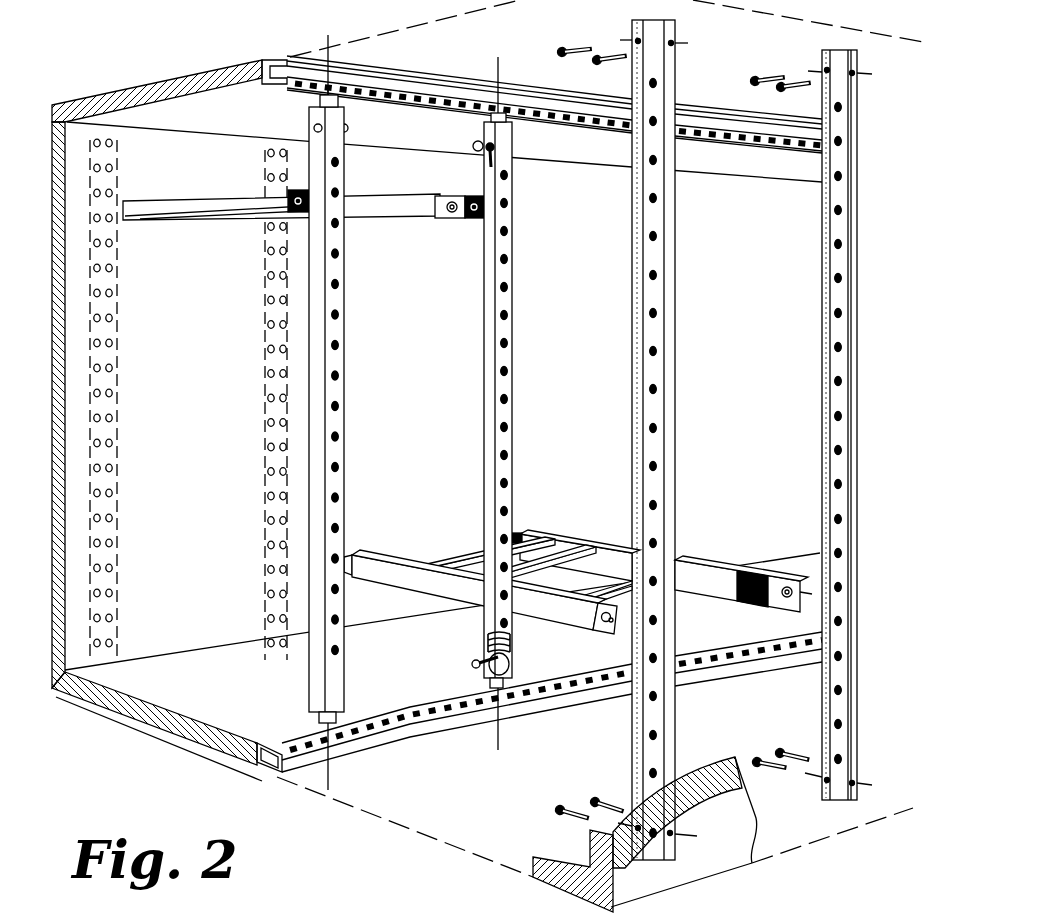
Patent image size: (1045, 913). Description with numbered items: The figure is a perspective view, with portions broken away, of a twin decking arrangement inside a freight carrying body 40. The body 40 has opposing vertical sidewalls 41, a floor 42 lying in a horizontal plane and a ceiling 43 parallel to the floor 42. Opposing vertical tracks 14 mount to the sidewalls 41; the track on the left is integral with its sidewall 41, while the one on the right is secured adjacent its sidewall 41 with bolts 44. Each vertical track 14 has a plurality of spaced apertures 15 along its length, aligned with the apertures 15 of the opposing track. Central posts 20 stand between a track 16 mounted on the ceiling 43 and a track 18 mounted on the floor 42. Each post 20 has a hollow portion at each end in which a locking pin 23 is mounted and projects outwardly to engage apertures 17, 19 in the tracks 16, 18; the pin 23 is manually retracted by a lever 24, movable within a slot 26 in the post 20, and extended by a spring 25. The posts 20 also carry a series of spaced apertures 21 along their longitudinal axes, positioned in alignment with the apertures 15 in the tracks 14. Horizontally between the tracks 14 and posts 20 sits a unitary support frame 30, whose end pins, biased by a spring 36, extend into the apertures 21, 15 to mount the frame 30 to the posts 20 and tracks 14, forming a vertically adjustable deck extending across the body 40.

The vertical track 14 is at (497, 440).
The apertures 15 is at (106, 343).
The track 16 is at (413, 83).
The apertures 17 is at (426, 100).
The track 18 is at (372, 732).
The apertures 19 is at (408, 722).
The post 20 is at (437, 405).
The apertures 21 is at (341, 466).
The locking pin 23 is at (339, 99).
The lever 24 is at (476, 667).
The spring 25 is at (486, 633).
The slot 26 is at (486, 159).
The unitary support frame 30 is at (735, 555).
The spring 36 is at (414, 229).
The freight carrying body 40 is at (148, 735).
The sidewall 41 is at (205, 445).
The floor 42 is at (230, 701).
The ceiling 43 is at (262, 121).
The bolts 44 is at (566, 47).